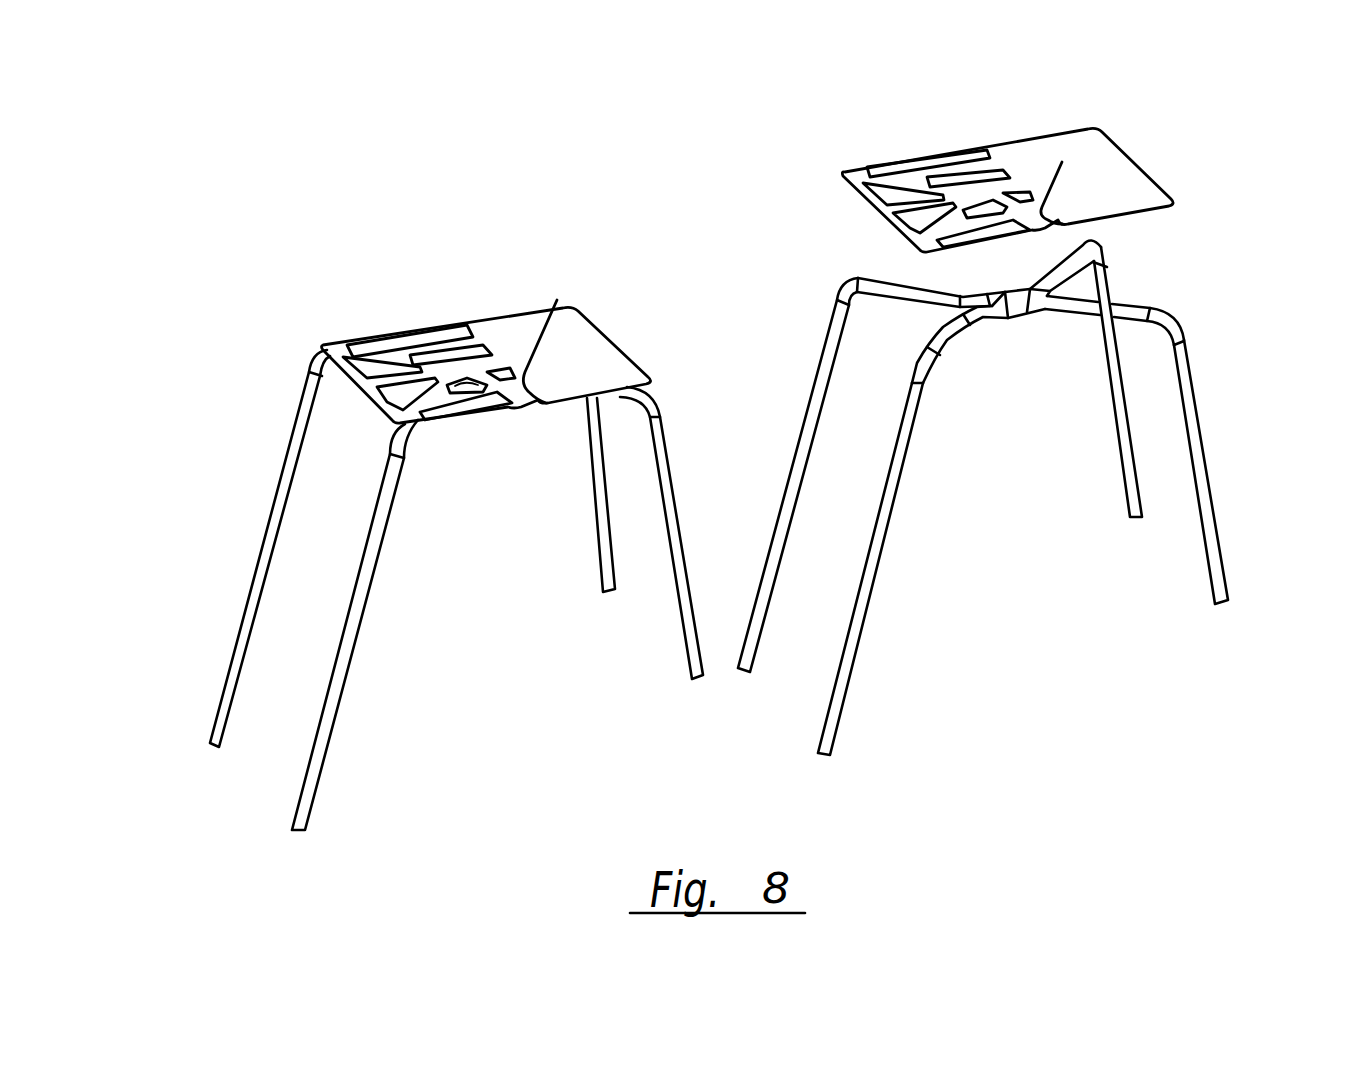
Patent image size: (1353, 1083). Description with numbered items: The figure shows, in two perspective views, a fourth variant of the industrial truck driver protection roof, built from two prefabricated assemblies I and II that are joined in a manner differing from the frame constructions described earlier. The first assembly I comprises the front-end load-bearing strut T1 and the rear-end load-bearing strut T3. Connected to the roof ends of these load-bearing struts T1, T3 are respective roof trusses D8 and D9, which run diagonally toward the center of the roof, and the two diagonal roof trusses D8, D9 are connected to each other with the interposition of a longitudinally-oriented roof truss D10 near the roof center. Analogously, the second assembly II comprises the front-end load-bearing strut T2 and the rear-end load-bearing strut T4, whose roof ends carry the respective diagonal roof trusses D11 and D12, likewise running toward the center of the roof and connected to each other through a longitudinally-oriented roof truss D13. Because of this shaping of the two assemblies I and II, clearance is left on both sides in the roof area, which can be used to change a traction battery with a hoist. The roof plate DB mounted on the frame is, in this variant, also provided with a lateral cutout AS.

The roof plate DB is at (492, 325).
The lateral cutout AS is at (523, 375).
The roof truss D8 is at (897, 288).
The roof truss D9 is at (1068, 266).
The longitudinally-oriented roof truss D10 is at (1007, 287).
The roof truss D11 is at (957, 331).
The roof truss D12 is at (1120, 308).
The longitudinally-oriented roof truss D13 is at (1010, 304).
The front-end load-bearing strut T1 is at (810, 403).
The front-end load-bearing strut T2 is at (865, 610).
The rear-end load-bearing strut T3 is at (1120, 383).
The rear-end load-bearing strut T4 is at (1210, 505).
The first assembly I is at (835, 248).
The second assembly II is at (1042, 575).